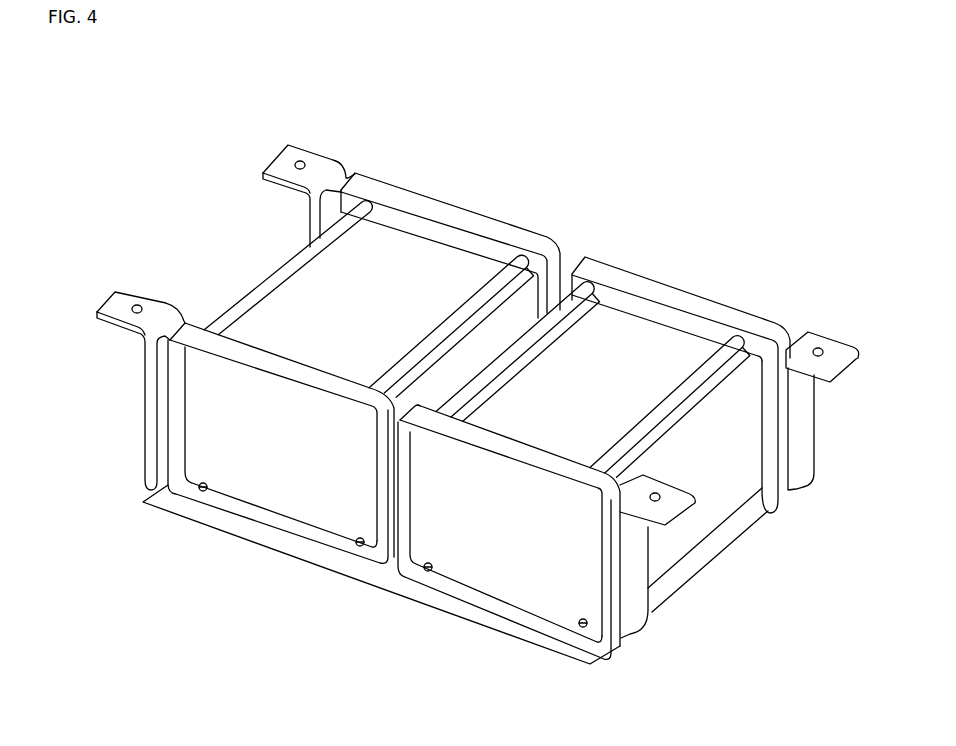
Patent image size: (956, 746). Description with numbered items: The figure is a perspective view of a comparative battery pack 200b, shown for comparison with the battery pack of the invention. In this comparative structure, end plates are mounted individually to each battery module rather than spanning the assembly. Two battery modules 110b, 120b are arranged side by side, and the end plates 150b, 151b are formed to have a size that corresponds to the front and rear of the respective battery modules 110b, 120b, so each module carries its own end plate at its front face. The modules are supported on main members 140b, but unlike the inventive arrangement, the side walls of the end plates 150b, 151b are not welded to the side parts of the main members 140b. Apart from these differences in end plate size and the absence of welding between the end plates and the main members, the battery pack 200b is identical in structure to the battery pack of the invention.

The battery pack 200b is at (118, 211).
The battery module 110b is at (645, 316).
The battery module 120b is at (445, 256).
The main member 140b is at (648, 611).
The end plate 150b is at (289, 472).
The end plate 151b is at (489, 557).